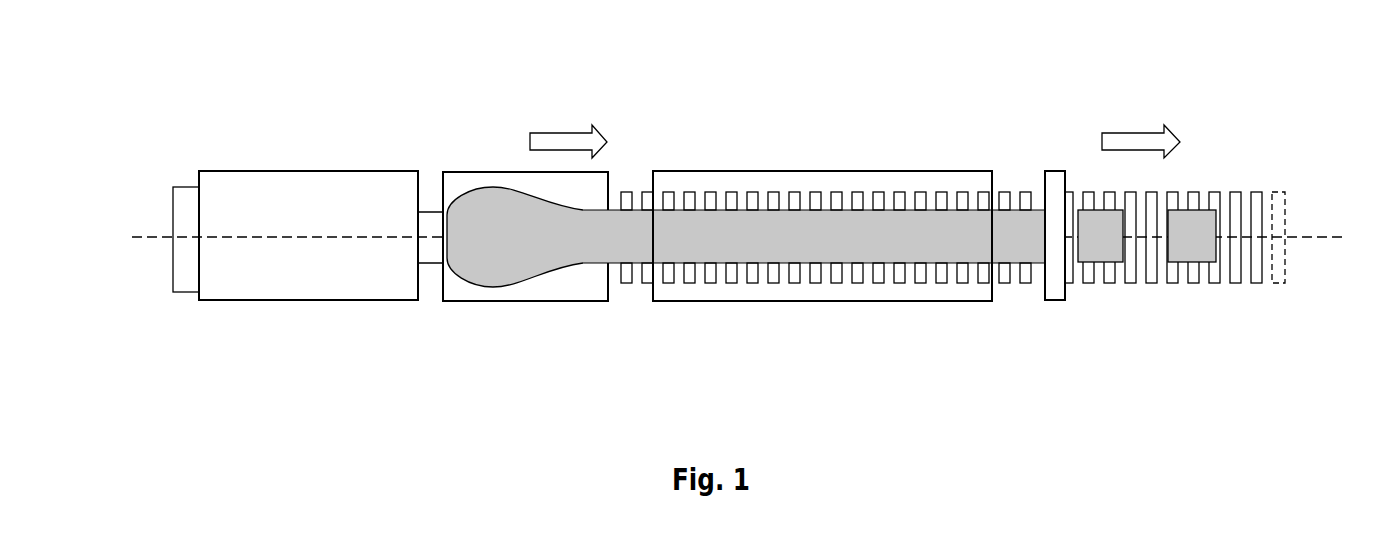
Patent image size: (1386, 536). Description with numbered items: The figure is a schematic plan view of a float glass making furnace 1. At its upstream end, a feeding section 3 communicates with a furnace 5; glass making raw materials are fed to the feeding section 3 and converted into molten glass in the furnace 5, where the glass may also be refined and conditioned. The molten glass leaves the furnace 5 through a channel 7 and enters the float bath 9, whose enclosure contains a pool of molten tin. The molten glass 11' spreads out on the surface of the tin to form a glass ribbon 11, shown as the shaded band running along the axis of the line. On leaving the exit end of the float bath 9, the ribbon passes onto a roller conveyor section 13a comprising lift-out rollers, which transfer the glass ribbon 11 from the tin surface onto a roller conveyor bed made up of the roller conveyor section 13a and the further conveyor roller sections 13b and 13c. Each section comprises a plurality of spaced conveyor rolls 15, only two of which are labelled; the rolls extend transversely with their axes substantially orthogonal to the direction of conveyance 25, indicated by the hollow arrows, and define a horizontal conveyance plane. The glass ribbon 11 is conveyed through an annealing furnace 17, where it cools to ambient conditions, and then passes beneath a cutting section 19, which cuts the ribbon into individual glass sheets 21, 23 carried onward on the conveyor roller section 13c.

The float glass making furnace 1 is at (852, 97).
The feeding section 3 is at (185, 276).
The furnace 5 is at (338, 173).
The channel 7 is at (432, 258).
The float bath 9 is at (481, 143).
The glass ribbon 11 is at (814, 154).
The molten glass 11' is at (515, 280).
The roller conveyor section 13a is at (633, 314).
The conveyor roller section 13b is at (852, 241).
The conveyor roller section 13c is at (1251, 166).
The conveyor rolls 15 is at (722, 192).
The annealing furnace 17 is at (886, 326).
The cutting section 19 is at (1055, 178).
The glass sheet 21 is at (1098, 257).
The glass sheet 23 is at (1185, 257).
The direction of conveyance 25 is at (566, 140).